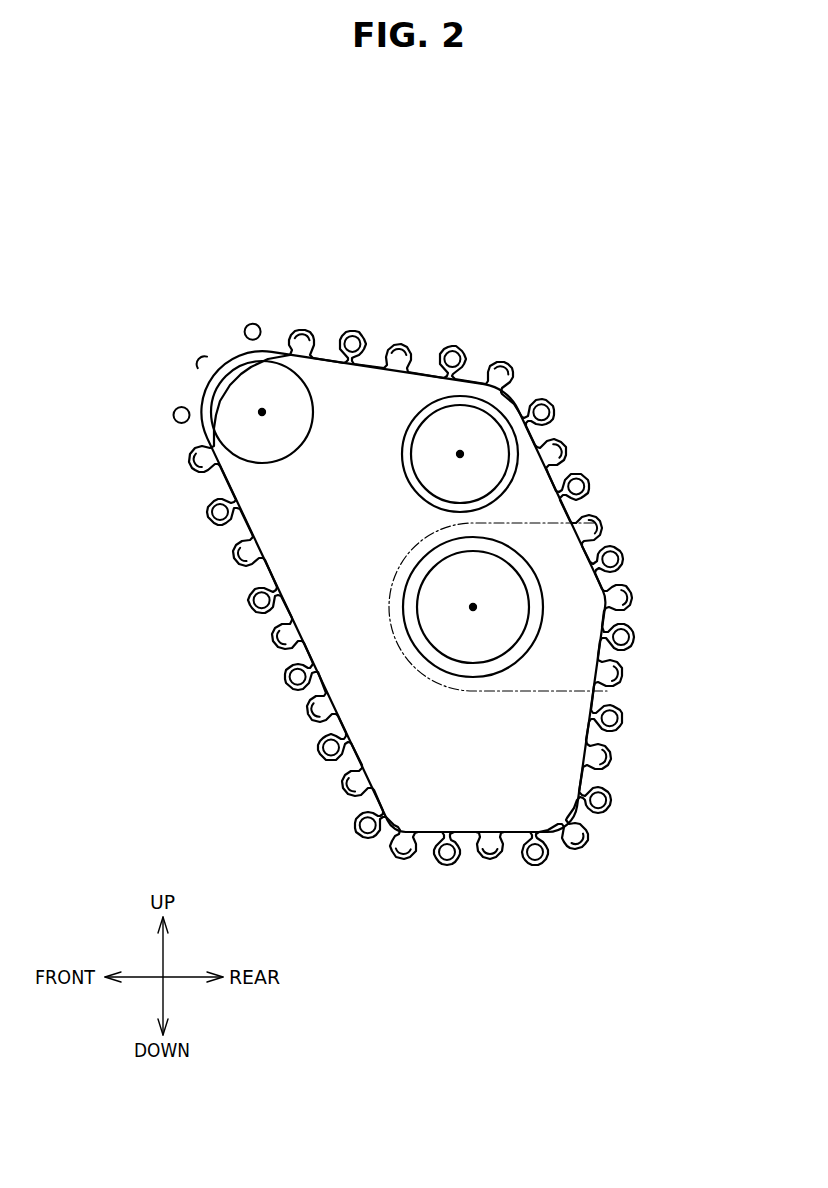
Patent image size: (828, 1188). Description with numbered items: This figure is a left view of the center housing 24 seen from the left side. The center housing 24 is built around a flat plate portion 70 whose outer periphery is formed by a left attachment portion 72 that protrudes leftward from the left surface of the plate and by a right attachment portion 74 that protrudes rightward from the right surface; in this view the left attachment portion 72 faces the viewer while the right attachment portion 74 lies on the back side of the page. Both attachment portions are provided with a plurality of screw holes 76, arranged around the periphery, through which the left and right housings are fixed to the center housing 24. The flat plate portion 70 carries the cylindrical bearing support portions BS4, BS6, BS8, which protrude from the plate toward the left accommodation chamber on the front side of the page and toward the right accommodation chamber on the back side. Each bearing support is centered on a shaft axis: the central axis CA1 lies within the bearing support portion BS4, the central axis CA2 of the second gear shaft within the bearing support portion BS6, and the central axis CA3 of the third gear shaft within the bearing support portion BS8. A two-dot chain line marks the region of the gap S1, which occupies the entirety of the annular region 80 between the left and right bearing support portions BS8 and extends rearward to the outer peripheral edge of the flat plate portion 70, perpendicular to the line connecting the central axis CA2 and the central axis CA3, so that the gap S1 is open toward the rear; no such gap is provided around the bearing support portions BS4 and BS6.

The center housing 24 is at (628, 285).
The flat plate portion 70 is at (507, 815).
The left attachment portion 72 is at (472, 372).
The right attachment portion 74 is at (513, 362).
The screw holes 76 is at (340, 786).
The annular region 80 is at (500, 626).
The central axis CA1 is at (262, 412).
The central axis of the second gear shaft CA2 is at (460, 454).
The central axis of the third gear shaft CA3 is at (473, 607).
The bearing support portion BS4 is at (210, 403).
The bearing support portion BS6 is at (508, 435).
The bearing support portion BS8 is at (527, 592).
The gap S1 is at (540, 523).